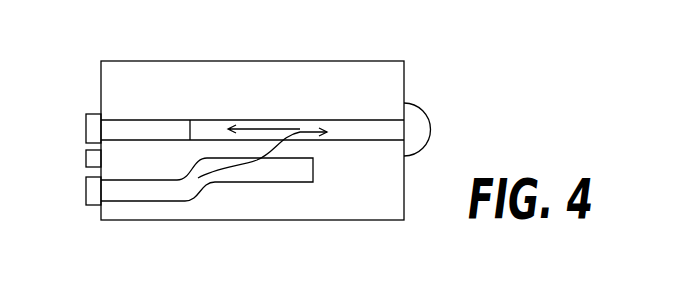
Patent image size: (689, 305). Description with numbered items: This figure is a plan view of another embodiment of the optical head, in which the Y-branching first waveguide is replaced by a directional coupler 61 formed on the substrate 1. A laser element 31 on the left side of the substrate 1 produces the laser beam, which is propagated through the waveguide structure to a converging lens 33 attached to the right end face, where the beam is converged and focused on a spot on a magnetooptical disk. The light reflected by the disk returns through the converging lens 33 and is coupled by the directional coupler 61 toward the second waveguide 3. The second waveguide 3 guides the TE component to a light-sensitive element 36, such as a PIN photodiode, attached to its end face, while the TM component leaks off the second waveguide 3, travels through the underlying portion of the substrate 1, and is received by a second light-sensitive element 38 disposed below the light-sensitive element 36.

The substrate 1 is at (392, 82).
The second waveguide 3 is at (167, 130).
The laser element 31 is at (93, 195).
The converging lens 33 is at (417, 129).
The light-sensitive element 36 is at (93, 130).
The second light-sensitive element 38 is at (93, 158).
The directional coupler 61 is at (290, 170).